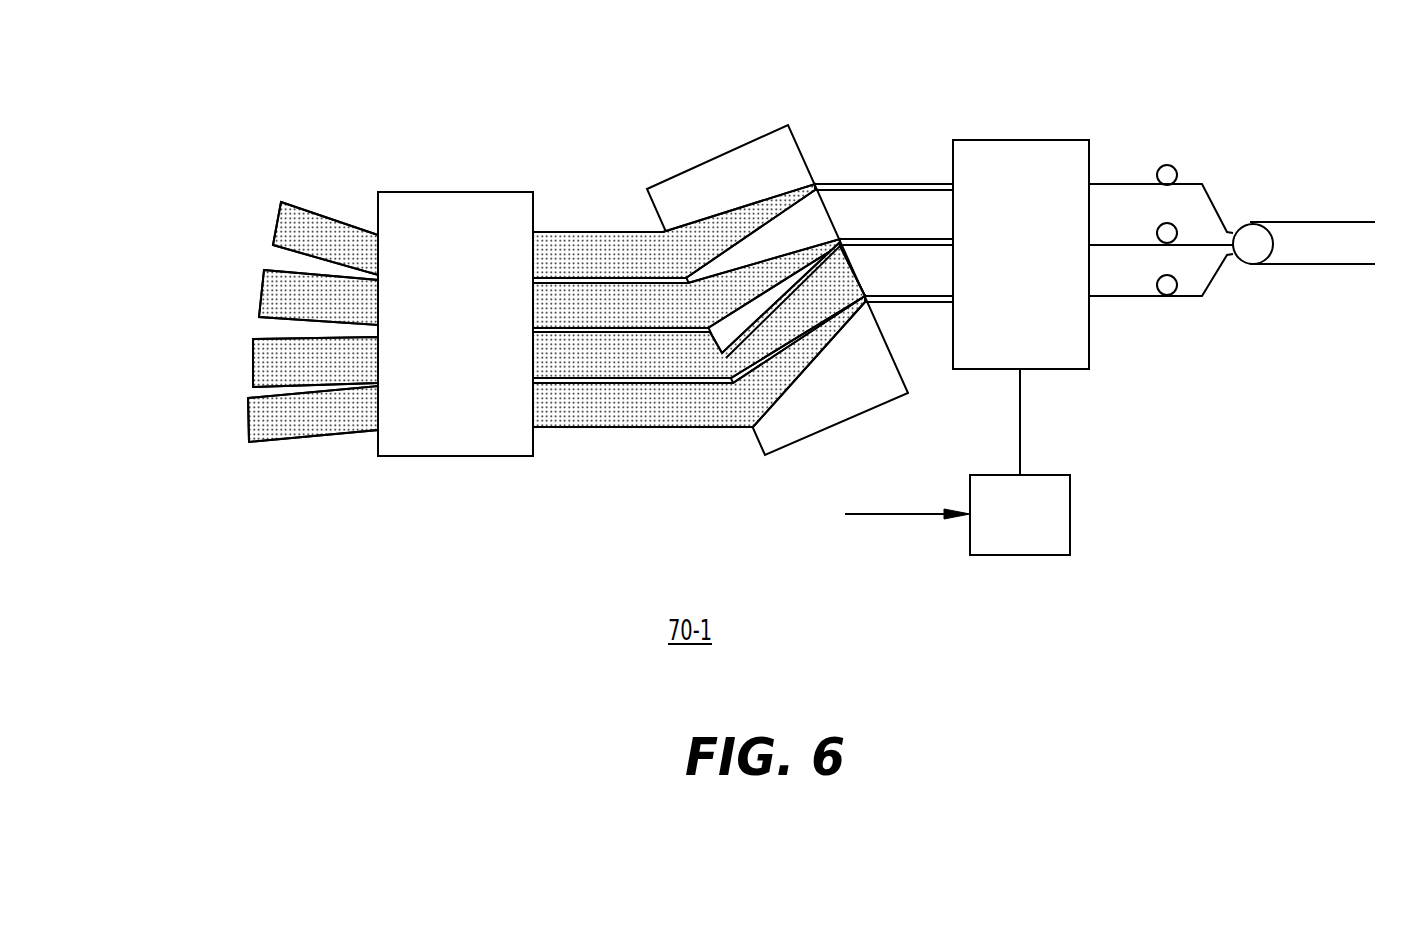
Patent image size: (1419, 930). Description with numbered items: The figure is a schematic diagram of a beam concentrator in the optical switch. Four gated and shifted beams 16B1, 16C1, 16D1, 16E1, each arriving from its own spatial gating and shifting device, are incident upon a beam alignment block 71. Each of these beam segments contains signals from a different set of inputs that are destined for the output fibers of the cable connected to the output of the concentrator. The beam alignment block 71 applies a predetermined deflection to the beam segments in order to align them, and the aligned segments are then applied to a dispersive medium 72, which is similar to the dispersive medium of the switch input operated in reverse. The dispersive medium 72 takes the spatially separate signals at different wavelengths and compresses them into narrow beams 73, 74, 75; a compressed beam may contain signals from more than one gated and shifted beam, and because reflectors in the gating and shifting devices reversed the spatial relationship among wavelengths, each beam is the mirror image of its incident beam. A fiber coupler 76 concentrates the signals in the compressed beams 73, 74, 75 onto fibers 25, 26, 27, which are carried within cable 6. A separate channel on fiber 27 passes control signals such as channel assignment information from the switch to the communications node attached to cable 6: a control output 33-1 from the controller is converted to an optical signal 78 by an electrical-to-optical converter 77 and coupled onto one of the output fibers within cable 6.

The cable 6 is at (1283, 222).
The gated and shifted beam 16B1 is at (285, 224).
The gated and shifted beam 16C1 is at (273, 288).
The gated and shifted beam 16D1 is at (253, 363).
The gated and shifted beam 16E1 is at (253, 422).
The fiber 25 is at (1193, 181).
The fiber 26 is at (1150, 243).
The fiber 27 is at (1190, 298).
The control output 33-1 is at (886, 514).
The beam alignment block 71 is at (478, 190).
The dispersive medium 72 is at (722, 152).
The narrow beam 73 is at (887, 182).
The narrow beam 74 is at (878, 250).
The narrow beam 75 is at (905, 303).
The fiber coupler 76 is at (1030, 138).
The electrical-to-optical converter 77 is at (1070, 517).
The optical signal 78 is at (1022, 418).